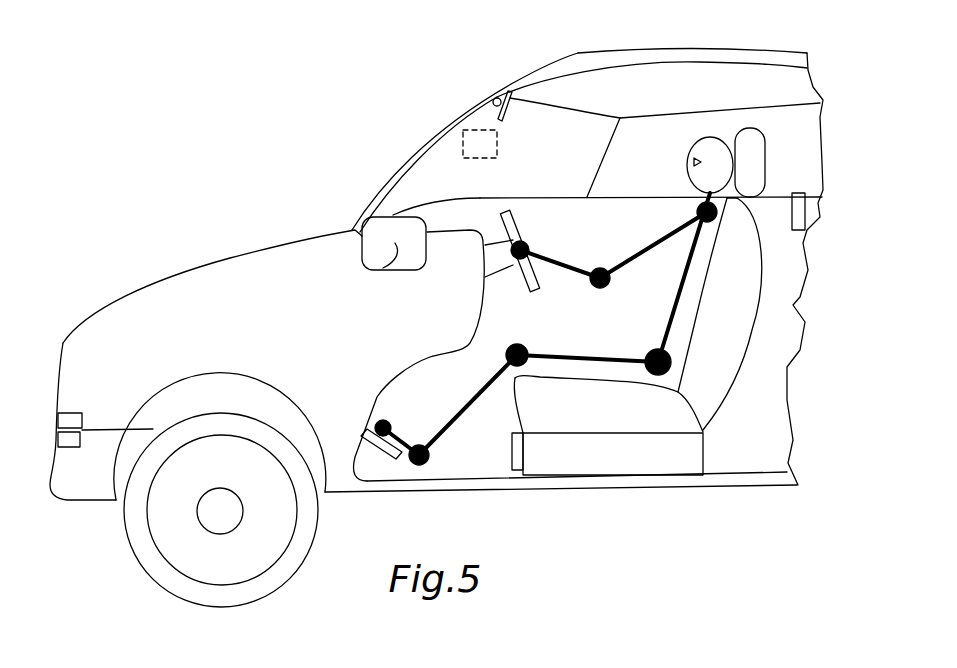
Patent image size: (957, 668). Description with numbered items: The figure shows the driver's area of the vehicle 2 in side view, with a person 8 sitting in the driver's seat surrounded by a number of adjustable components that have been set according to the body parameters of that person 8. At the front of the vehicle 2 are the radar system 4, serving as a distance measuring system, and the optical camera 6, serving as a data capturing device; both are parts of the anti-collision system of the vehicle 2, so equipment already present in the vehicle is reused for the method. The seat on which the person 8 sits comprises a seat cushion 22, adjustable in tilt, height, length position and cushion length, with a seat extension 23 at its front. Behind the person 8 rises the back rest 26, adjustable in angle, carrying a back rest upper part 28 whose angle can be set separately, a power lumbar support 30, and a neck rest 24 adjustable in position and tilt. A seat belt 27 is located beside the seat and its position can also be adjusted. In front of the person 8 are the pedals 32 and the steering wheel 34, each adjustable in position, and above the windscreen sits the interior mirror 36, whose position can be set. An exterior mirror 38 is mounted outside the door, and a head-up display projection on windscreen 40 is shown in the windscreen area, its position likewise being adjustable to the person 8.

The vehicle 2 is at (346, 87).
The radar system 4 is at (68, 420).
The optical camera 6 is at (67, 441).
The person 8 is at (670, 148).
The seat cushion 22 is at (589, 465).
The seat extension 23 is at (513, 458).
The neck rest 24 is at (755, 167).
The back rest 26 is at (698, 388).
The seat belt 27 is at (805, 212).
The back rest upper part 28 is at (748, 220).
The power lumbar support 30 is at (745, 343).
The pedals 32 is at (370, 446).
The steering wheel 34 is at (513, 228).
The interior mirror 36 is at (507, 107).
The exterior mirrors 38 is at (382, 264).
The head-up display projection on windscreen 40 is at (488, 145).